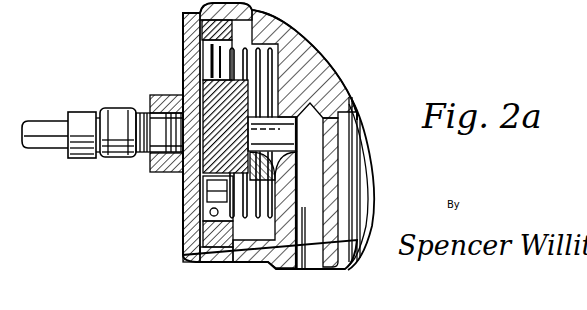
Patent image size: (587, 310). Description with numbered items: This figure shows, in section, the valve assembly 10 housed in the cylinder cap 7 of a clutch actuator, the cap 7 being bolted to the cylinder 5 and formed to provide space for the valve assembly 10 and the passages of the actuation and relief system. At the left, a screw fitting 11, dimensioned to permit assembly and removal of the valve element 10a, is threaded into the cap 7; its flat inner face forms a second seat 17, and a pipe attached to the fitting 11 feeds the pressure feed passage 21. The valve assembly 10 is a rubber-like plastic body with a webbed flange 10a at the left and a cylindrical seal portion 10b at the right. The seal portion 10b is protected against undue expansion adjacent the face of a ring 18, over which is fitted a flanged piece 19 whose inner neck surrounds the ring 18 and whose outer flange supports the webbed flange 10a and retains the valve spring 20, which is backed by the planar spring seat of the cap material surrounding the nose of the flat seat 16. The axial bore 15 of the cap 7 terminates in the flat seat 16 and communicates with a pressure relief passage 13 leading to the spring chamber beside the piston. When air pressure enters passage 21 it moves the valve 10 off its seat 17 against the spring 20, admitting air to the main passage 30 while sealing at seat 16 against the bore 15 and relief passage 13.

The cylinder 5 is at (364, 214).
The cylinder cap 7 is at (186, 27).
The valve assembly 10 is at (178, 57).
The webbed flange 10a is at (186, 226).
The cylindrical seal portion 10b is at (292, 154).
The screw fitting 11 is at (158, 96).
The pressure relief passage 13 is at (322, 154).
The axial bore 15 is at (326, 118).
The flat seat 16 is at (292, 210).
The second seat 17 is at (186, 197).
The ring 18 is at (246, 52).
The flanged piece 19 is at (226, 46).
The valve spring 20 is at (186, 244).
The pressure feed passage 21 is at (170, 176).
The main passage 30 is at (296, 32).